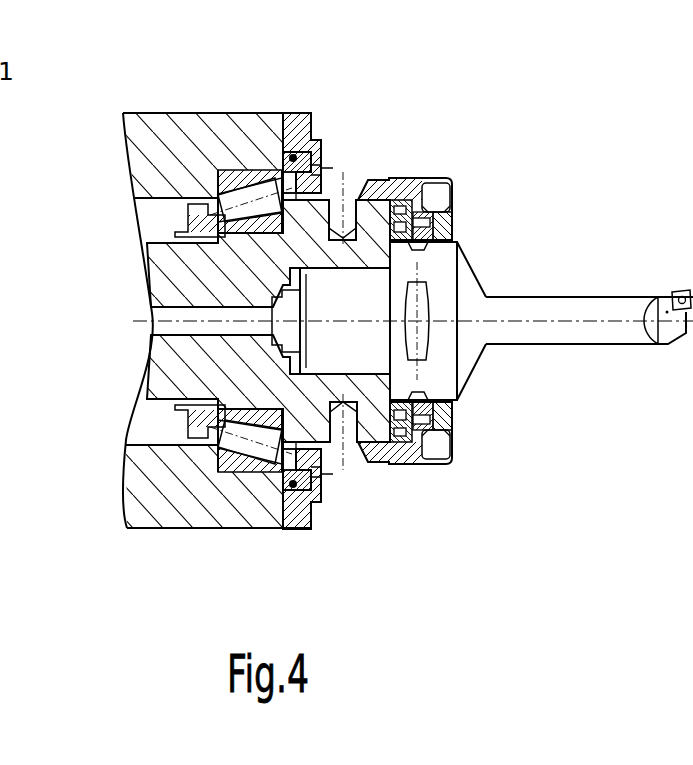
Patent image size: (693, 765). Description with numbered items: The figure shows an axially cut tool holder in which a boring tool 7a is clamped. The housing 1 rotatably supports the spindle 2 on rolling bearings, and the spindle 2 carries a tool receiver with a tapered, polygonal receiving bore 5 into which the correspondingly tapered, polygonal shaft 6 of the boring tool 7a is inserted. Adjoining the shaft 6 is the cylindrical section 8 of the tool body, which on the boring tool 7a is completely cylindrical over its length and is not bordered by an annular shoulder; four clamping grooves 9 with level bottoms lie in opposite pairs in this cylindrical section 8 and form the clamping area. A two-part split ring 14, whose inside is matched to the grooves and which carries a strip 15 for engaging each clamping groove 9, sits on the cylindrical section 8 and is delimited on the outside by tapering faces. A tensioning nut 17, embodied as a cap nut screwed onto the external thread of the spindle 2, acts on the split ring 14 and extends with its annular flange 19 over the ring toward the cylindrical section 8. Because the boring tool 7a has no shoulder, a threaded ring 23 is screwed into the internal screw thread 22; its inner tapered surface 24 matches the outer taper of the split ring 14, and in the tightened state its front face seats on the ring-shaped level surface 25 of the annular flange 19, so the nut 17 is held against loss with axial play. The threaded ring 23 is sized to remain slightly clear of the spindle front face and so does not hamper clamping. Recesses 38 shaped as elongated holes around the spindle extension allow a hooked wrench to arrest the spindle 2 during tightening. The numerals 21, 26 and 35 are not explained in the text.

The housing 1 is at (138, 130).
The spindle 2 is at (192, 265).
The receiving bore 5 is at (273, 318).
The shaft 6 is at (354, 316).
The boring tool 7a is at (563, 308).
The cylindrical section 8 is at (442, 253).
The clamping grooves 9 is at (445, 392).
The split ring 14 is at (451, 232).
The strip 15 is at (483, 271).
The tensioning nut 17 is at (412, 182).
The annular flange 19 is at (450, 428).
The sealing ring 21 is at (443, 188).
The internal screw thread 22 is at (403, 460).
The threaded ring 23 is at (418, 188).
The inner tapered surface 24 is at (432, 200).
The ring-shaped level surface 25 is at (430, 456).
The sealing arrangement 26 is at (394, 164).
The screw 35 is at (350, 435).
The recesses 38 is at (348, 190).